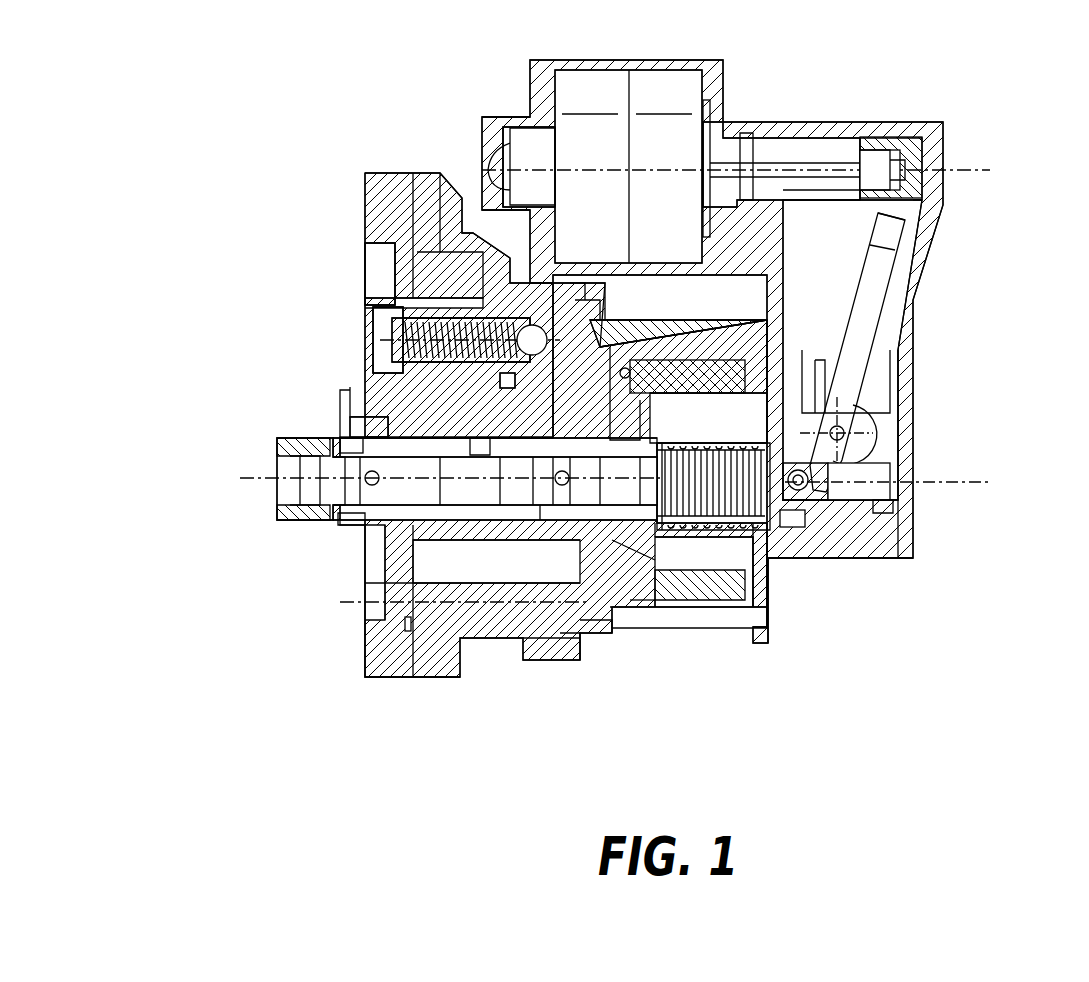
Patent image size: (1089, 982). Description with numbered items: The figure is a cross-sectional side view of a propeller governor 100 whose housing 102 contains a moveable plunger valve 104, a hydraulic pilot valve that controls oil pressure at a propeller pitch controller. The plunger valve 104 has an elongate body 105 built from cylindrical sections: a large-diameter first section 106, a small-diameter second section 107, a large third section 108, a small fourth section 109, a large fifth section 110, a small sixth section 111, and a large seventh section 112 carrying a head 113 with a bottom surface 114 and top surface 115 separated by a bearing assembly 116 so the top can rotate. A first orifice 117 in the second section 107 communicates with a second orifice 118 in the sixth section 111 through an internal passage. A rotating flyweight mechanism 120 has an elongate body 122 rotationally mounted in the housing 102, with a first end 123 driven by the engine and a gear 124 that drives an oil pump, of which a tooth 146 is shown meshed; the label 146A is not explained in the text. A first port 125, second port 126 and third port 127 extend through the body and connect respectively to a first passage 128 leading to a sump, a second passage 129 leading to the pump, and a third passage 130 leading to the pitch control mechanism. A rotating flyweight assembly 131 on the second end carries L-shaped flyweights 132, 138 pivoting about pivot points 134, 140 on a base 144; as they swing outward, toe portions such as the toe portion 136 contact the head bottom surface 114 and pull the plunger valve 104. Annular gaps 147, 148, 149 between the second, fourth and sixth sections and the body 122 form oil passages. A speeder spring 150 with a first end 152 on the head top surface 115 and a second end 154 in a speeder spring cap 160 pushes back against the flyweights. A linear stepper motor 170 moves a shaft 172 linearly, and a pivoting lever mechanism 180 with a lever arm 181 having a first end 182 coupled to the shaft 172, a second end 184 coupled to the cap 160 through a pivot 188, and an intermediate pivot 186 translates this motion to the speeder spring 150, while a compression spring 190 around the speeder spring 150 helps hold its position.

The propeller governor 100 is at (916, 652).
The housing 102 is at (938, 232).
The plunger valve 104 is at (310, 470).
The elongate body 105 is at (415, 528).
The first section 106 is at (310, 485).
The second section 107 is at (348, 485).
The third section 108 is at (420, 490).
The fourth section 109 is at (465, 500).
The fifth section 110 is at (540, 500).
The sixth section 111 is at (562, 490).
The seventh section 112 is at (575, 650).
The head 113 is at (700, 600).
The bottom surface 114 is at (680, 600).
The top surface 115 is at (735, 590).
The bearing assembly 116 is at (655, 440).
The first orifice 117 is at (365, 495).
The second orifice 118 is at (555, 510).
The rotating flyweight mechanism 120 is at (600, 355).
The elongate body 122 is at (385, 420).
The first end 123 is at (348, 445).
The gear 124 is at (380, 280).
The first port 125 is at (370, 430).
The second port 126 is at (480, 452).
The third port 127 is at (528, 328).
The first passage 128 is at (375, 400).
The second passage 129 is at (520, 427).
The third passage 130 is at (530, 262).
The rotating flyweight assembly 131 is at (592, 318).
The flyweight 132 is at (760, 580).
The pivot point 134 is at (620, 600).
The toe portion 136 is at (650, 590).
The flyweight 138 is at (735, 335).
The pivot point 140 is at (630, 370).
The base 144 is at (600, 640).
The tooth 146 is at (430, 325).
The spring housing 146A is at (410, 365).
The first annular gap 147 is at (395, 440).
The second annular gap 148 is at (407, 632).
The third annular gap 149 is at (545, 640).
The speeder spring 150 is at (807, 520).
The first end 152 is at (770, 540).
The second end 154 is at (847, 563).
The speeder spring cap 160 is at (820, 537).
The linear stepper motor 170 is at (712, 95).
The shaft 172 is at (870, 137).
The pivoting lever mechanism 180 is at (880, 320).
The lever arm 181 is at (895, 285).
The first end 182 is at (930, 205).
The second end 184 is at (892, 490).
The pivot 186 is at (845, 430).
The pivot 188 is at (805, 468).
The compression spring 190 is at (742, 443).